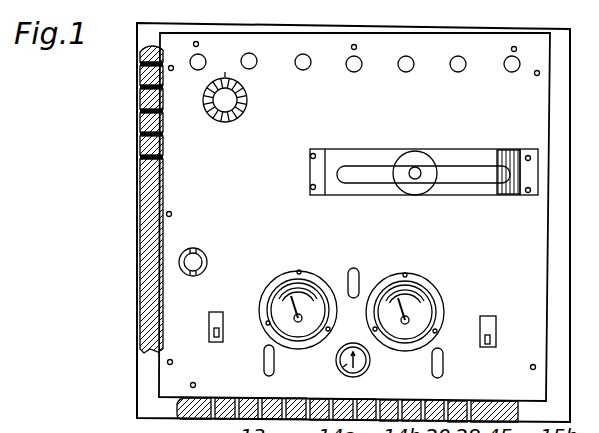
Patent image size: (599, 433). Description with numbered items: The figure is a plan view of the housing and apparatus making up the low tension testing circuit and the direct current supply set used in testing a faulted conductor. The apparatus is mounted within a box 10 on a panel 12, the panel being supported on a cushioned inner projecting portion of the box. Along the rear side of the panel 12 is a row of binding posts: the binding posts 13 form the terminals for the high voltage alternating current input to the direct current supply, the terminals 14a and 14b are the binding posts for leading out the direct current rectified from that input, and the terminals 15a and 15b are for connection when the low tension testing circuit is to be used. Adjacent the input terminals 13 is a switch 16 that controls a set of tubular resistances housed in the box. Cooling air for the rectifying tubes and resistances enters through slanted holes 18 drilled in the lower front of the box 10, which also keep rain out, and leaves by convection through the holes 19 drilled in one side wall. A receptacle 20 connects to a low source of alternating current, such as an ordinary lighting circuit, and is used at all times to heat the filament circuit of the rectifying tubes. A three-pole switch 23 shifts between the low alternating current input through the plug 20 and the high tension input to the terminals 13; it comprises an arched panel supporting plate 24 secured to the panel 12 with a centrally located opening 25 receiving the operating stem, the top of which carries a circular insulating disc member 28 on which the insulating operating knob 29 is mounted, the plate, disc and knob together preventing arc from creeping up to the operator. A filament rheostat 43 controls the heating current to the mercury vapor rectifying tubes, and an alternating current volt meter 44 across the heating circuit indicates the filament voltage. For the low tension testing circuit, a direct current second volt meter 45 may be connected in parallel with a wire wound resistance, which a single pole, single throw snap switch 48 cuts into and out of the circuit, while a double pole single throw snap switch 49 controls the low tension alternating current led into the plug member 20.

The box 10 is at (139, 270).
The panel 12 is at (176, 172).
The binding posts 13 is at (302, 56).
The terminal 14a is at (356, 57).
The terminal 14b is at (408, 57).
The terminal 15a is at (460, 57).
The terminal 15b is at (514, 58).
The switch 16 is at (247, 100).
The holes 18 is at (262, 397).
The holes 19 is at (140, 160).
The receptacle 20 is at (196, 260).
The three-pole switch 23 is at (424, 148).
The arched panel supporting plate 24 is at (440, 158).
The centrally located opening 25 is at (512, 167).
The circular insulating disc member 28 is at (415, 170).
The operating knob 29 is at (420, 165).
The filament rheostat 43 is at (338, 365).
The alternating current volt meter 44 is at (298, 270).
The direct current second volt meter 45 is at (430, 289).
The single pole, single throw snap switch 48 is at (488, 332).
The double pole single throw snap switch 49 is at (211, 330).